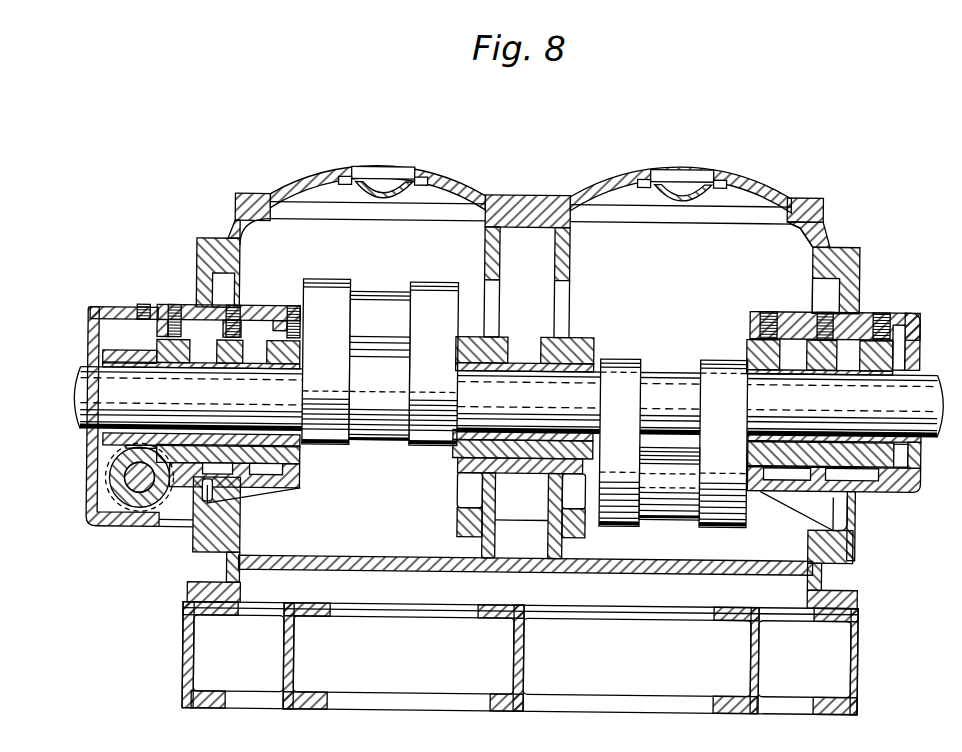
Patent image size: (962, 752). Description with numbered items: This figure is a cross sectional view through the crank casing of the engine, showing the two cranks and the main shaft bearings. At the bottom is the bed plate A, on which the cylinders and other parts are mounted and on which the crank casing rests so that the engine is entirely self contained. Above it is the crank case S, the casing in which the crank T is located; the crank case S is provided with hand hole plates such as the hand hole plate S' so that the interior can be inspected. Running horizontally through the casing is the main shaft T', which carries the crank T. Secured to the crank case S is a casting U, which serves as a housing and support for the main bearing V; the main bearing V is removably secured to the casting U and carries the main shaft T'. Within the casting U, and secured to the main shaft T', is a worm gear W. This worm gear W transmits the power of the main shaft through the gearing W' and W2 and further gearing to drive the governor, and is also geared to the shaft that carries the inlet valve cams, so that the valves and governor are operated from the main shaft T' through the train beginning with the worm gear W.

The hand hole plate S' is at (531, 183).
The crank case S is at (234, 207).
The casting U is at (195, 261).
The worm gear W is at (138, 405).
The main bearing V is at (164, 348).
The crank T is at (380, 362).
The main shaft T' is at (509, 402).
The gearing W' is at (116, 476).
The gearing W2 is at (125, 488).
The bed plate A is at (520, 658).